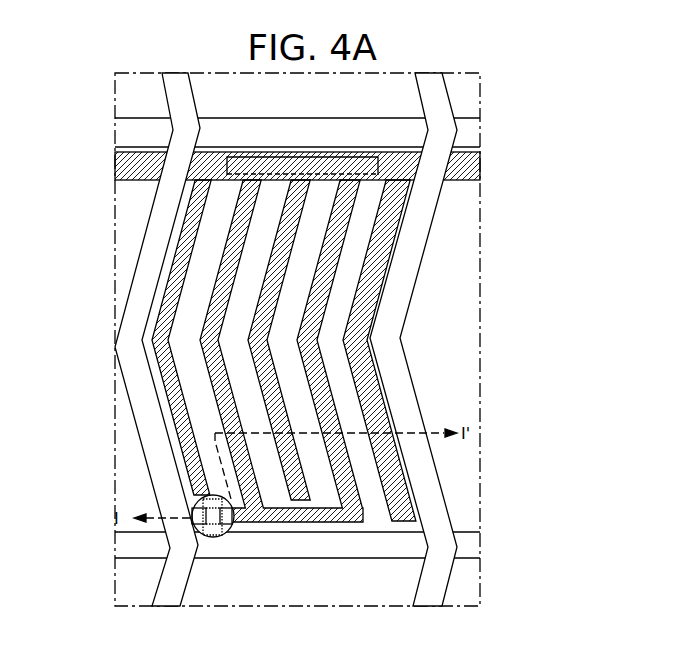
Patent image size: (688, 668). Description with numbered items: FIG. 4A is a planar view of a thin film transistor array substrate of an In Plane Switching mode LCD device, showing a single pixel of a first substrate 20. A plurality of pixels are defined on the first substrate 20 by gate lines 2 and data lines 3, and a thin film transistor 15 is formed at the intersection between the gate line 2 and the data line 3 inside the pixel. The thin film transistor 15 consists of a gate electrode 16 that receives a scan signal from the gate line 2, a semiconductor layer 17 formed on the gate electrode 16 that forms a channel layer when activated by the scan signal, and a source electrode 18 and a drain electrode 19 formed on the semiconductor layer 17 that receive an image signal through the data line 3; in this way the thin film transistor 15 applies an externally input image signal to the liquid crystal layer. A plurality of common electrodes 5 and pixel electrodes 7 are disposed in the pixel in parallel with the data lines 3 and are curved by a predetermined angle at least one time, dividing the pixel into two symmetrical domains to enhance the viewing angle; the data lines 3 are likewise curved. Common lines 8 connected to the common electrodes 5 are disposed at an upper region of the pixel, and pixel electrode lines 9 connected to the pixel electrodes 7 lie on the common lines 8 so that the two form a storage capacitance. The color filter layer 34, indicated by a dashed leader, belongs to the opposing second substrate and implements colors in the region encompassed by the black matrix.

The gate line 2 is at (131, 556).
The data line 3 is at (145, 255).
The common electrode 5 is at (380, 262).
The pixel electrode 7 is at (220, 284).
The common line 8 is at (122, 167).
The pixel electrode line 9 is at (300, 166).
The thin film transistor 15 is at (218, 538).
The gate electrode 16 is at (208, 540).
The semiconductor layer 17 is at (202, 500).
The source electrode 18 is at (194, 512).
The drain electrode 19 is at (233, 524).
The first substrate 20 is at (481, 219).
The color filter layer 34 is at (172, 321).